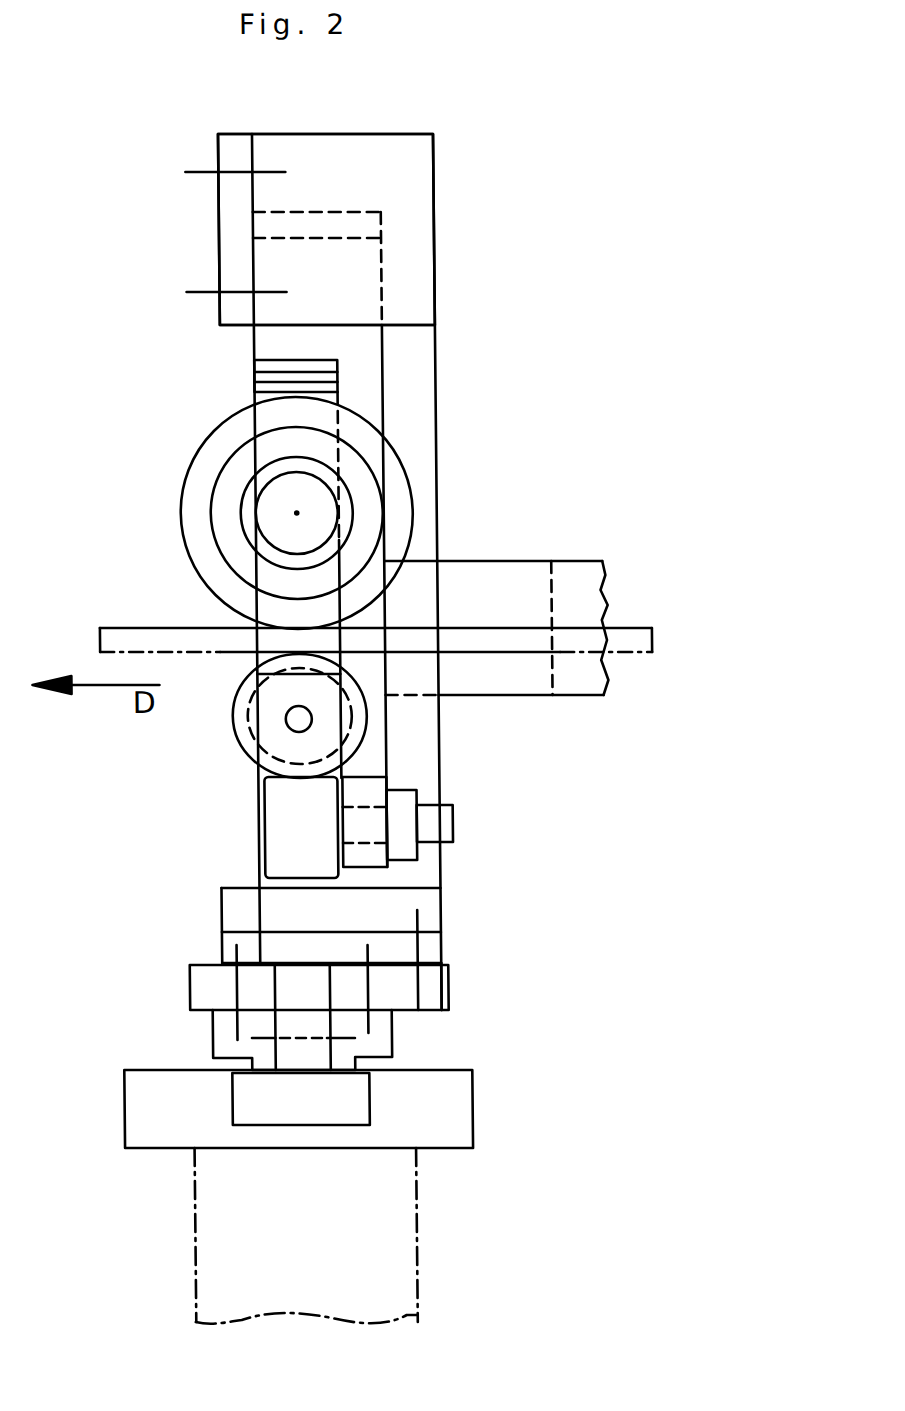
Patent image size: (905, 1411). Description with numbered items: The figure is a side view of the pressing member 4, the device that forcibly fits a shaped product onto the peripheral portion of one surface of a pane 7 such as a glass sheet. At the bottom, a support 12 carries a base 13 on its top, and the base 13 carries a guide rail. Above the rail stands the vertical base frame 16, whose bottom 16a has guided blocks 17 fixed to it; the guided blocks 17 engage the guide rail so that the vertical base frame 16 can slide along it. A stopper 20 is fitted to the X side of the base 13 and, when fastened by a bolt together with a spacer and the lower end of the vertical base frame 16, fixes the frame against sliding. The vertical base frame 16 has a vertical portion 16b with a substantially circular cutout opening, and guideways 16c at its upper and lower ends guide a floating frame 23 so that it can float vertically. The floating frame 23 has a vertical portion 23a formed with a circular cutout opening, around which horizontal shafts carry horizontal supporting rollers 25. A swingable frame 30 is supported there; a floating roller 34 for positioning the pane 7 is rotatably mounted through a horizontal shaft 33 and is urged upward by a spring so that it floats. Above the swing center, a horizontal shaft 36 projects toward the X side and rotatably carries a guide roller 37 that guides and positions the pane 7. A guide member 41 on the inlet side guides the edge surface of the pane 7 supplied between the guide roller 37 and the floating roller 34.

The pressing member 4 is at (490, 178).
The vertical base frame 16 is at (445, 240).
The bottom of vertical base frame 16a is at (433, 1008).
The vertical portion 16b is at (411, 758).
The guideways 16c is at (220, 213).
The floating frame 23 is at (240, 345).
The vertical portion of floating frame 23a is at (360, 400).
The swingable frame 30 is at (238, 407).
The horizontal shaft 36 is at (306, 510).
The guide roller 37 is at (199, 540).
The guide member 41 is at (493, 578).
The pane 7 is at (625, 640).
The floating roller 34 is at (227, 747).
The horizontal shaft 33 is at (281, 727).
The horizontal supporting rollers 25 is at (279, 850).
The guided blocks 17 is at (204, 1033).
The stopper 20 is at (300, 1025).
The base 13 is at (449, 1148).
The support 12 is at (383, 1303).